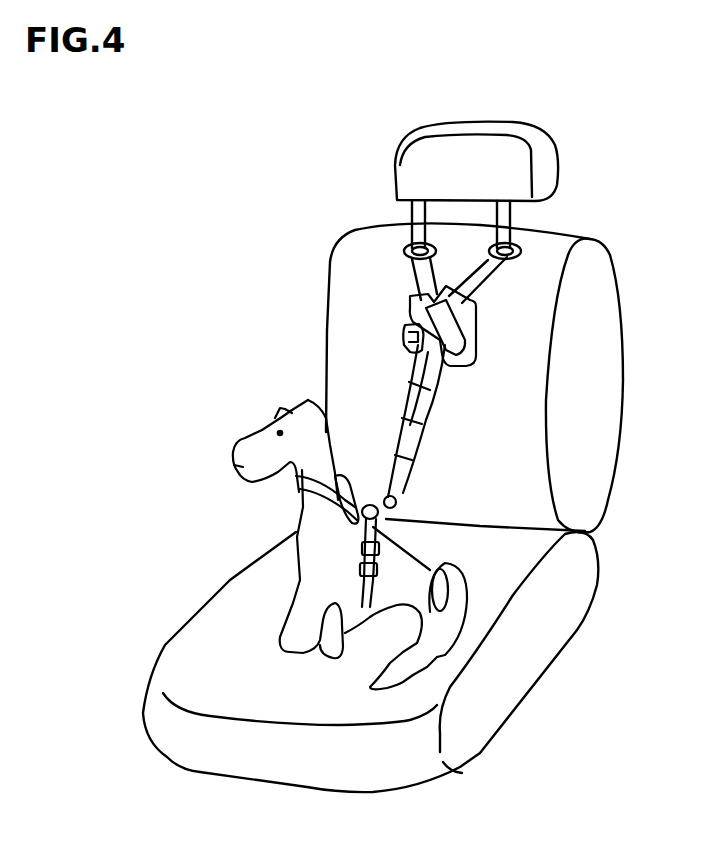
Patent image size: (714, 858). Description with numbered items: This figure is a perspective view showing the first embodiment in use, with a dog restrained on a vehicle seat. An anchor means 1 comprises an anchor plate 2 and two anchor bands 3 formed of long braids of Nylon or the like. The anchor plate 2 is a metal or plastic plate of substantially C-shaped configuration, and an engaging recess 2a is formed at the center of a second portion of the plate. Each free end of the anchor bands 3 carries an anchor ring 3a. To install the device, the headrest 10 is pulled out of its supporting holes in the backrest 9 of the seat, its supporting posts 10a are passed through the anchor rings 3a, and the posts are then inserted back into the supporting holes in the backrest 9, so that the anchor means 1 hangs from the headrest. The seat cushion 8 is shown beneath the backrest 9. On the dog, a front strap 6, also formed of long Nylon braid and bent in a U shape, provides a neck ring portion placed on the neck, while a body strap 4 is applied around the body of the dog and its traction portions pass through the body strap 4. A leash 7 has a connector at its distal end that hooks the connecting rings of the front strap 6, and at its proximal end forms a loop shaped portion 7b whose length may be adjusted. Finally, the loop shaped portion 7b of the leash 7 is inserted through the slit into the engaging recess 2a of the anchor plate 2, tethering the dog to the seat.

The anchor means 1 is at (434, 357).
The anchor plate 2 is at (468, 336).
The engaging recess 2a is at (462, 350).
The anchor bands 3 is at (418, 278).
The anchor ring 3a is at (412, 248).
The body strap 4 is at (380, 580).
The front strap 6 is at (297, 507).
The leash 7 is at (408, 447).
The loop shaped portion 7b is at (420, 380).
The seat cushion 8 is at (560, 622).
The backrest 9 is at (607, 362).
The headrest 10 is at (407, 165).
The supporting posts 10a is at (417, 215).